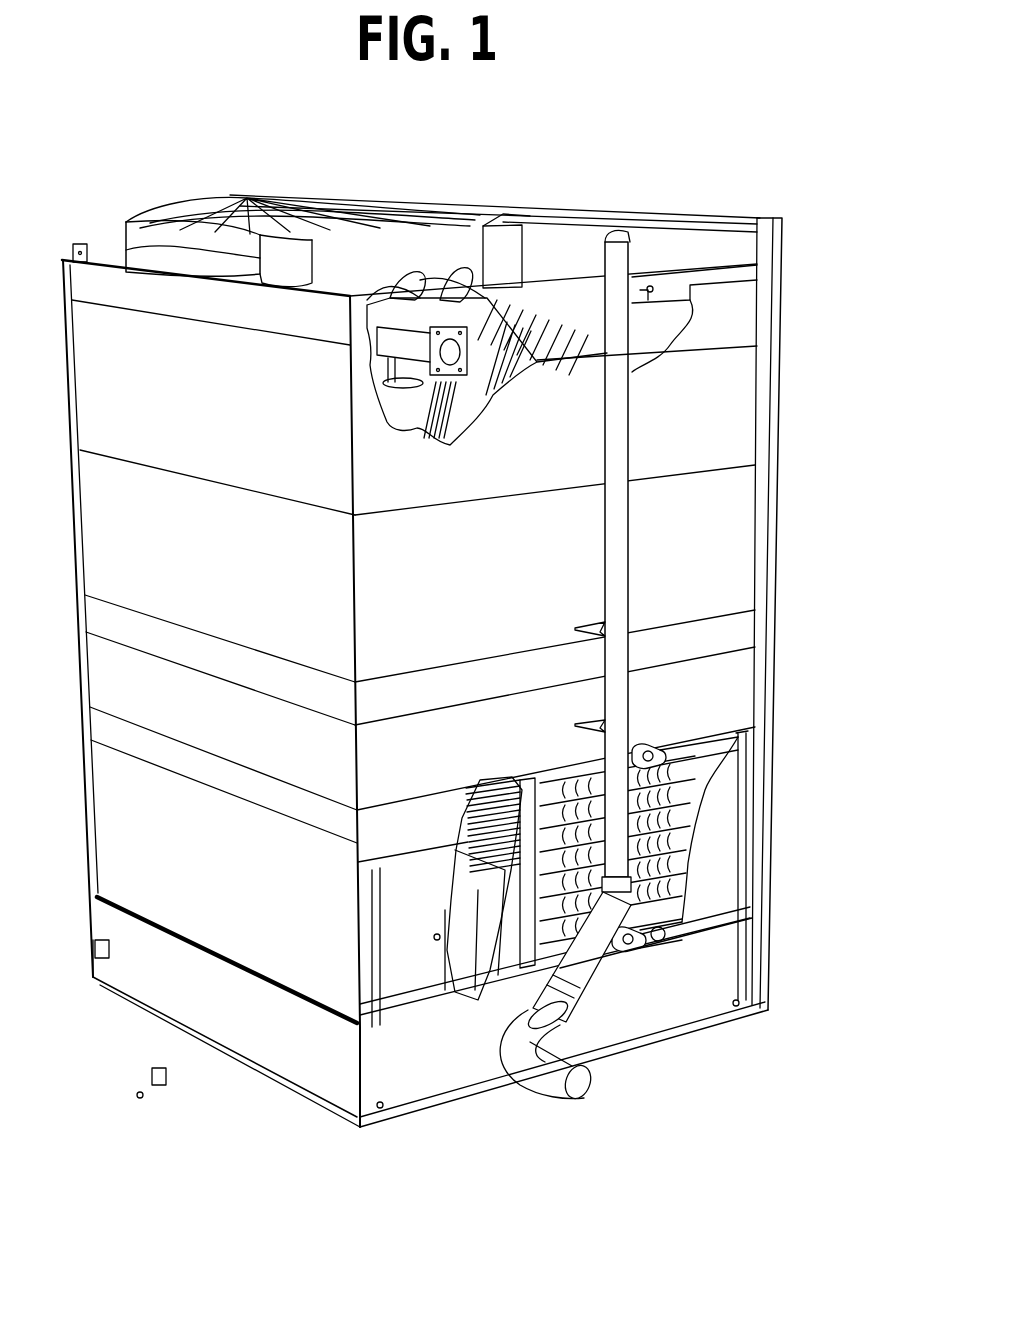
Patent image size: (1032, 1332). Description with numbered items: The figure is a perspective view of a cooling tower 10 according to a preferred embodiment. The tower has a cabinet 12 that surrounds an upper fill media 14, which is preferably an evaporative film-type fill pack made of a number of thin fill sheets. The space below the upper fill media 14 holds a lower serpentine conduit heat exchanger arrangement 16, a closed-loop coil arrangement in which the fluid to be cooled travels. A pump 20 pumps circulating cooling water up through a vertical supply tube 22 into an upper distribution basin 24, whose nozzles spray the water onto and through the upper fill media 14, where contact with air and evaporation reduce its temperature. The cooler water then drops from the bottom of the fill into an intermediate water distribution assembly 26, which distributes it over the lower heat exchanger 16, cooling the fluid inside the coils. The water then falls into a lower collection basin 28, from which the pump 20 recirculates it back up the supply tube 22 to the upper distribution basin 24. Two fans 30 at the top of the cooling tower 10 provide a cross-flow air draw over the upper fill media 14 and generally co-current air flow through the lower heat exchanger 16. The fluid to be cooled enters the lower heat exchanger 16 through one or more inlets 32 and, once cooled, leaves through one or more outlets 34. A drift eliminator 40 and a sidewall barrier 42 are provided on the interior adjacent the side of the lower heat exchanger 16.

The cooling tower 10 is at (540, 178).
The cabinet 12 is at (782, 428).
The upper fill media 14 is at (668, 277).
The lower serpentine conduit heat exchanger arrangement 16 is at (697, 802).
The pump 20 is at (580, 1090).
The vertical supply tube 22 is at (628, 432).
The upper distribution basin 24 is at (738, 247).
The intermediate water distribution assembly 26 is at (728, 632).
The lower collection basin 28 is at (688, 985).
The fans 30 is at (130, 248).
The inlets 32 is at (690, 932).
The outlets 34 is at (688, 750).
The drift eliminator 40 is at (476, 945).
The sidewall barrier 42 is at (470, 842).